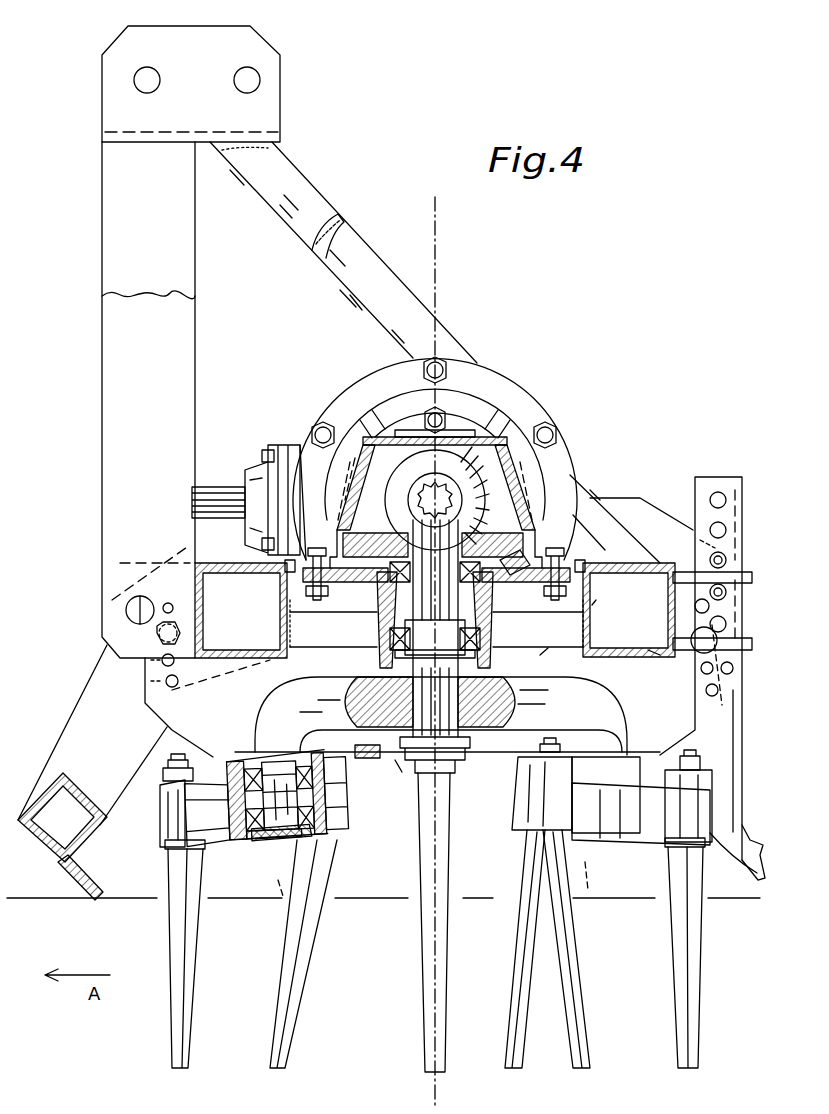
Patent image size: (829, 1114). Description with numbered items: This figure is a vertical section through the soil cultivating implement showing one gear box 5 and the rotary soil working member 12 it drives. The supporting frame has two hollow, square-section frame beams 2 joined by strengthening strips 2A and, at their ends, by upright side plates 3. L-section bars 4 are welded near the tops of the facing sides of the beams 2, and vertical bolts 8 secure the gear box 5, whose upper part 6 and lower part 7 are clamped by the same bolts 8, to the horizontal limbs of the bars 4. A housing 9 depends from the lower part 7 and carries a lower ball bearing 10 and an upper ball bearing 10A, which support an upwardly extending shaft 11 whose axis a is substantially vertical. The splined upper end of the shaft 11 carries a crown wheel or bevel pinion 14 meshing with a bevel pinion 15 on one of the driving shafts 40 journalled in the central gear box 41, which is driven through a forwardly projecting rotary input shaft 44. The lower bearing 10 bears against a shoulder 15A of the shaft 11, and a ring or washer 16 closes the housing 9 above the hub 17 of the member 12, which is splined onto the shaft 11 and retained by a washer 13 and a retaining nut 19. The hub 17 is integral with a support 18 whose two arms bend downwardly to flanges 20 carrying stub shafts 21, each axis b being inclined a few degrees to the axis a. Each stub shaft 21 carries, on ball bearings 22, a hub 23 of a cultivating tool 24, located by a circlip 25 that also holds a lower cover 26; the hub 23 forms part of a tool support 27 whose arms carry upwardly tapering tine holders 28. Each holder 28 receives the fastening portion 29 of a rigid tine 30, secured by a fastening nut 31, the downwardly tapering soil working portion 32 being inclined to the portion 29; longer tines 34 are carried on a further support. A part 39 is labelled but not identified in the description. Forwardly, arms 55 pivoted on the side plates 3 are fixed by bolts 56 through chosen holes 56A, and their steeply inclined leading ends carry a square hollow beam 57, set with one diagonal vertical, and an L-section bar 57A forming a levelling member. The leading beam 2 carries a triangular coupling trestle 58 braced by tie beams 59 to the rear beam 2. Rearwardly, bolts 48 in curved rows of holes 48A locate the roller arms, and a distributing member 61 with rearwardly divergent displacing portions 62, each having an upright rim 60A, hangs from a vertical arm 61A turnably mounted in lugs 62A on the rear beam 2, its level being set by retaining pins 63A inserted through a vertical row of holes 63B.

The frame beam 2 is at (258, 668).
The strengthening strip 2A is at (555, 660).
The side plate 3 is at (625, 497).
The bar of L-shaped cross-section 4 is at (276, 578).
The gear box 5 is at (522, 432).
The upper part of gear box 6 is at (522, 473).
The lower part of gear box 7 is at (600, 603).
The bolt 8 is at (317, 598).
The housing 9 is at (378, 620).
The lower ball bearing 10 is at (395, 641).
The upper ball bearing 10A is at (386, 586).
The shaft 11 is at (470, 720).
The rotary soil working member 12 is at (444, 675).
The washer 13 is at (470, 756).
The crown wheel or bevel pinion 14 is at (530, 538).
The bevel pinion 15 is at (397, 485).
The shoulder 15A is at (472, 654).
The ring or washer 16 is at (392, 665).
The hub 17 is at (398, 736).
The support 18 is at (610, 705).
The retaining nut 19 is at (399, 777).
The flange 20 is at (320, 710).
The stub shaft 21 is at (334, 795).
The ball bearing 22 is at (332, 776).
The hub 23 is at (236, 758).
The cultivating tool 24 is at (157, 804).
The circlip 25 is at (246, 840).
The lower cap or cover 26 is at (266, 842).
The tool support 27 is at (214, 768).
The tine holder 28 is at (160, 830).
The fastening portion 29 is at (172, 762).
The rigid tine 30 is at (172, 928).
The fastening nut 31 is at (160, 769).
The soil working portion 32 is at (188, 1002).
The rigid soil working tine 34 is at (426, 978).
The splined shaft 39 is at (413, 508).
The driving shaft 40 is at (432, 497).
The central gear box 41 is at (346, 398).
The rotary input shaft 44 is at (190, 497).
The bolt 48 is at (720, 612).
The hole 48A is at (700, 705).
The arm 55 is at (86, 675).
The bolt 56 is at (148, 626).
The hole 56A is at (138, 674).
The hollow beam 57 is at (76, 778).
The bar of L-shaped cross-section 57A is at (96, 873).
The coupling member or trestle 58 is at (196, 326).
The tie beam 59 is at (370, 256).
The upright rim 60A is at (739, 828).
The distributing member 61 is at (740, 882).
The arm 61A is at (715, 488).
The displacing portion 62 is at (735, 870).
The lug 62A is at (660, 650).
The retaining pin 63A is at (680, 530).
The transverse hole 63B is at (706, 530).
The longitudinal axis of shaft a is at (438, 290).
The longitudinal axis of stub shaft b is at (435, 879).